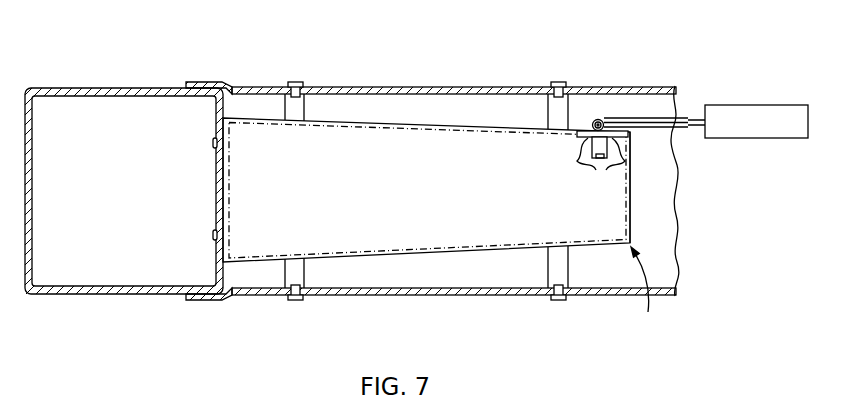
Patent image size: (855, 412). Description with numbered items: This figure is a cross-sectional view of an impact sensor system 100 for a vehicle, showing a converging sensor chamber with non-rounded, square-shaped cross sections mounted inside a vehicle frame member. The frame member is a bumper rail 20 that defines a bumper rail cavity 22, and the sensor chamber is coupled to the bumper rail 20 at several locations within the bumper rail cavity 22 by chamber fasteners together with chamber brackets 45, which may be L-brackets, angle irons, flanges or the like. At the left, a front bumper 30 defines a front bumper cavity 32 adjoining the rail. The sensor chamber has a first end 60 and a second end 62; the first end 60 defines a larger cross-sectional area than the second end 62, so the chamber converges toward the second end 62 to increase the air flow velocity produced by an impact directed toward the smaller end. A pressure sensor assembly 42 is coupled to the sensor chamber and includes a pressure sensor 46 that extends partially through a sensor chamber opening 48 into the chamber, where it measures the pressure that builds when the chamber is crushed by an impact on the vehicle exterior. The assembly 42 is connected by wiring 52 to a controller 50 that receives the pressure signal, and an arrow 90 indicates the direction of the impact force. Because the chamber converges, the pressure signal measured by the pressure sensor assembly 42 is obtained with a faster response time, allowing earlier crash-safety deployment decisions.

The impact sensor system 100 is at (384, 66).
The bumper rail 20 is at (450, 83).
The bumper rail cavity 22 is at (658, 248).
The front bumper 30 is at (133, 84).
The front bumper cavity 32 is at (74, 112).
The pressure sensor assembly 42 is at (591, 122).
The chamber brackets 45 is at (287, 111).
The pressure sensor 46 is at (600, 162).
The sensor chamber opening 48 is at (607, 156).
The controller 50 is at (777, 105).
The cable 52 is at (645, 130).
The first end 60 is at (227, 178).
The second end 62 is at (622, 190).
The direction of travel 90 is at (642, 289).